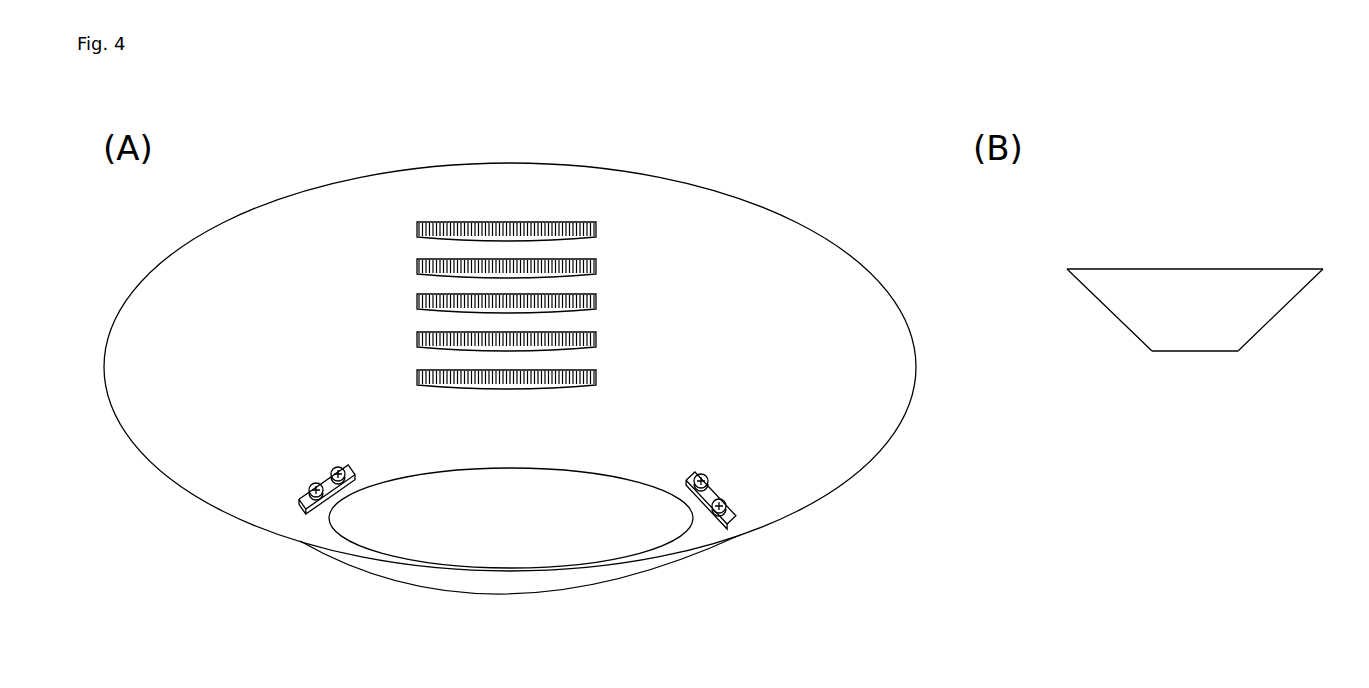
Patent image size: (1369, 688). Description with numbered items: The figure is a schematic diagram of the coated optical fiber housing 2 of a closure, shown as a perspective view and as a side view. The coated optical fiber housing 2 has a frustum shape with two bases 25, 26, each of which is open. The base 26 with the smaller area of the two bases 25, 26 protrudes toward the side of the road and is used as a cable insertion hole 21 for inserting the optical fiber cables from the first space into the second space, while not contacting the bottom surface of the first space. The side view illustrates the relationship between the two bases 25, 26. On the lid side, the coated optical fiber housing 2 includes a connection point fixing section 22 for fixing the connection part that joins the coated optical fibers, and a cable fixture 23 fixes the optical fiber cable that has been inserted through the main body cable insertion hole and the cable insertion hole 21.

The coated optical fiber housing 2 is at (812, 197).
The cable insertion hole 21 is at (783, 482).
The connection point fixing section 22 is at (499, 217).
The cable fixture 23 is at (722, 493).
The base 25 is at (1145, 269).
The base 26 is at (628, 532).